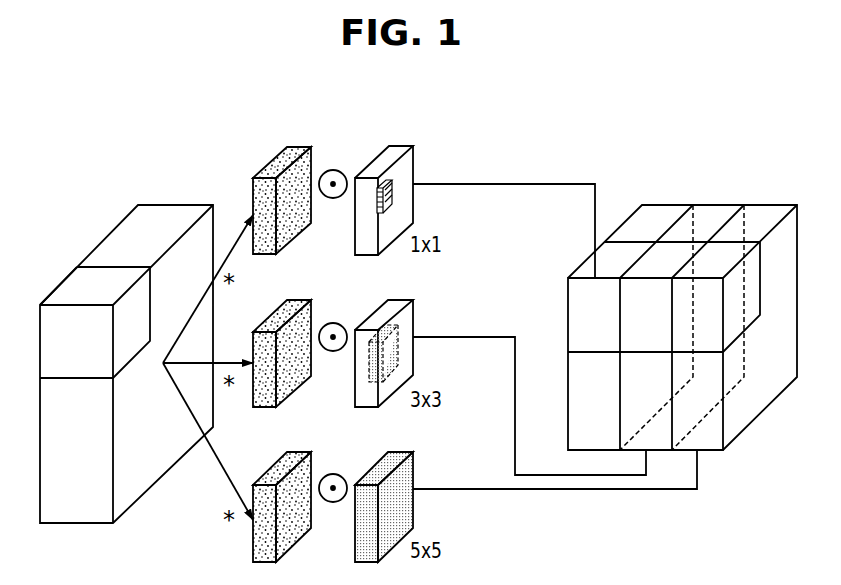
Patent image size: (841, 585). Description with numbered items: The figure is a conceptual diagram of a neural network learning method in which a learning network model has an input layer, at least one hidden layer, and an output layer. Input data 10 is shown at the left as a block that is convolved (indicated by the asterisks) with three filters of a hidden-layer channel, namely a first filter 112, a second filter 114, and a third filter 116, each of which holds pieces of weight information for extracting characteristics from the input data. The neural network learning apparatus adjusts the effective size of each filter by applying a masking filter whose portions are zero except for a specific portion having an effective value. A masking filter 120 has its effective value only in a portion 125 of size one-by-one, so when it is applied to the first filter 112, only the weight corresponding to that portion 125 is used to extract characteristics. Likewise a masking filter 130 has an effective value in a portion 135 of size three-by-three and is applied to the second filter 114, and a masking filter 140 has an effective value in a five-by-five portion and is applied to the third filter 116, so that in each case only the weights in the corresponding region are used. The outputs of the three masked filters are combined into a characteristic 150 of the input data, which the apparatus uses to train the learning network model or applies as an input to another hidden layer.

The input feature map 10 is at (168, 217).
The first filter 112 is at (297, 148).
The second filter 114 is at (295, 303).
The third filter 116 is at (295, 458).
The masking filter 120 is at (393, 152).
The portion having a size of 1×1 125 is at (390, 195).
The masking filter 130 is at (392, 307).
The portion having a size of 3×3 135 is at (392, 340).
The masking filter 140 is at (405, 477).
The characteristic 150 is at (709, 217).